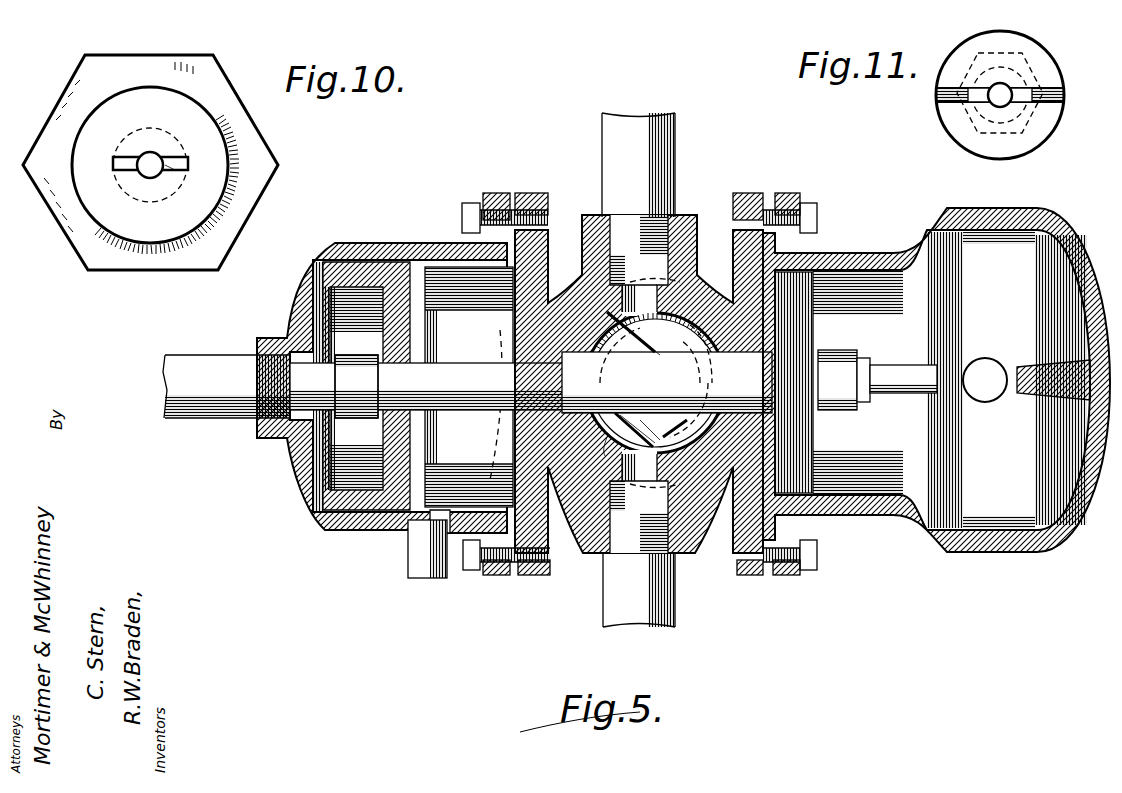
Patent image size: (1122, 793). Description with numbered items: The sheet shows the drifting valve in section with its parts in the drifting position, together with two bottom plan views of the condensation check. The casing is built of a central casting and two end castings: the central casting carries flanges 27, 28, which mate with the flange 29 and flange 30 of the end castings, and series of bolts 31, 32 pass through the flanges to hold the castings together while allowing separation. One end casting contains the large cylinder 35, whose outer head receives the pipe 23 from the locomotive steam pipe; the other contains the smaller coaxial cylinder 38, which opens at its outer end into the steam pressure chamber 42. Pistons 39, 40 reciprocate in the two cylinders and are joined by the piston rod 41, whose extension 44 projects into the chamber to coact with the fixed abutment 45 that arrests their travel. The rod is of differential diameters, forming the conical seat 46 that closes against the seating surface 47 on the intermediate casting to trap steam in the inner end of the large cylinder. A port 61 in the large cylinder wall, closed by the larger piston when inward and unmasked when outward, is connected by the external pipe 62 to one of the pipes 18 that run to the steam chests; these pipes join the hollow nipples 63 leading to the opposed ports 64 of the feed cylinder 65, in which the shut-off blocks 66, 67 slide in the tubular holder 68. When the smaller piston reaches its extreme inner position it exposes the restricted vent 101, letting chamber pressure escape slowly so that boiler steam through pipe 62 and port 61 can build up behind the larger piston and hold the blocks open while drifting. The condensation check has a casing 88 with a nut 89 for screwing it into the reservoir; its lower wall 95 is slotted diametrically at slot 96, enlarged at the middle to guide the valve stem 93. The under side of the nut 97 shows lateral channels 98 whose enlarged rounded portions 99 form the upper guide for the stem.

In FIG. 5, the pipes 18 is at (668, 133).
In FIG. 5, the pipe 23 is at (212, 410).
In FIG. 5, the flange 27 is at (535, 575).
In FIG. 5, the flange 28 is at (760, 575).
In FIG. 5, the flange 29 is at (500, 575).
In FIG. 5, the flange 30 is at (788, 575).
In FIG. 5, the bolts 31 is at (470, 572).
In FIG. 5, the bolts 32 is at (817, 556).
In FIG. 5, the large cylinder 35 is at (483, 262).
In FIG. 5, the cylinder 38 is at (855, 490).
In FIG. 5, the piston 39 is at (362, 260).
In FIG. 5, the piston 40 is at (817, 448).
In FIG. 5, the piston rod 41 is at (667, 379).
In FIG. 5, the steam pressure chamber 42 is at (1000, 523).
In FIG. 5, the extension 44 is at (918, 366).
In FIG. 5, the fixed abutment 45 is at (1027, 381).
In FIG. 5, the conical seat 46 is at (427, 386).
In FIG. 5, the seating surface 47 is at (515, 433).
In FIG. 5, the port 61 is at (440, 530).
In FIG. 5, the pipe 62 is at (422, 570).
In FIG. 5, the nipples 63 is at (592, 215).
In FIG. 5, the ports 64 is at (620, 293).
In FIG. 5, the feed cylinder 65 is at (607, 437).
In FIG. 5, the shut-off block 66 is at (655, 380).
In FIG. 5, the shut-off block 67 is at (704, 392).
In FIG. 5, the tubular holder 68 is at (651, 425).
In FIG. 5, the vent 101 is at (825, 257).
In FIG. 10, the casing 88 is at (225, 178).
In FIG. 10, the nut 89 is at (277, 153).
In FIG. 10, the valve stem 93 is at (145, 167).
In FIG. 10, the lower wall 95 is at (165, 142).
In FIG. 10, the slot 96 is at (177, 168).
In FIG. 11, the nut 97 is at (1062, 115).
In FIG. 11, the lateral channels 98 is at (1027, 86).
In FIG. 11, the enlarged rounded portions 99 is at (990, 105).